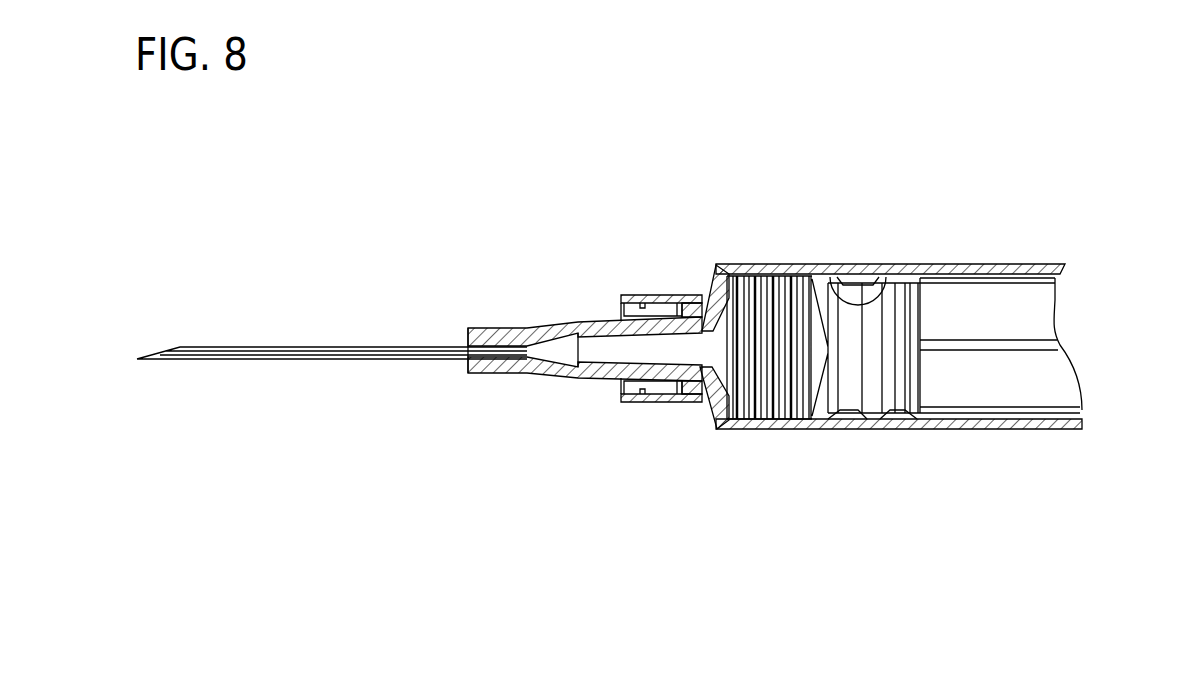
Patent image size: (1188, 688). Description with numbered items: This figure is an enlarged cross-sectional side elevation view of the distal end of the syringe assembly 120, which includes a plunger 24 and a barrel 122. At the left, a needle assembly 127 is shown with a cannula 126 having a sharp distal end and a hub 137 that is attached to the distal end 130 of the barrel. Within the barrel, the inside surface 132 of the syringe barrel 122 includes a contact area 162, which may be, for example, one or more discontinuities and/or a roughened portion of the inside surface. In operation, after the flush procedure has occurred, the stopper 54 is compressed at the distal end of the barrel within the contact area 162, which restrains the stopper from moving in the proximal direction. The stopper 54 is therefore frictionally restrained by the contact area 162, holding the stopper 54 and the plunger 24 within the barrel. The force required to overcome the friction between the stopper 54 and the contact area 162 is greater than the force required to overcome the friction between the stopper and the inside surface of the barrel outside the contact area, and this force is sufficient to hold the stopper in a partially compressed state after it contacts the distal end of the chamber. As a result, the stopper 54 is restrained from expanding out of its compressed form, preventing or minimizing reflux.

The plunger 24 is at (1048, 322).
The stopper 54 is at (877, 402).
The syringe assembly 120 is at (1003, 428).
The barrel 122 is at (899, 347).
The cannula 126 is at (283, 358).
The needle assembly 127 is at (572, 349).
The distal end of the barrel 130 is at (720, 430).
The inside surface 132 is at (862, 353).
The hub 137 is at (538, 373).
The contact area 162 is at (767, 302).